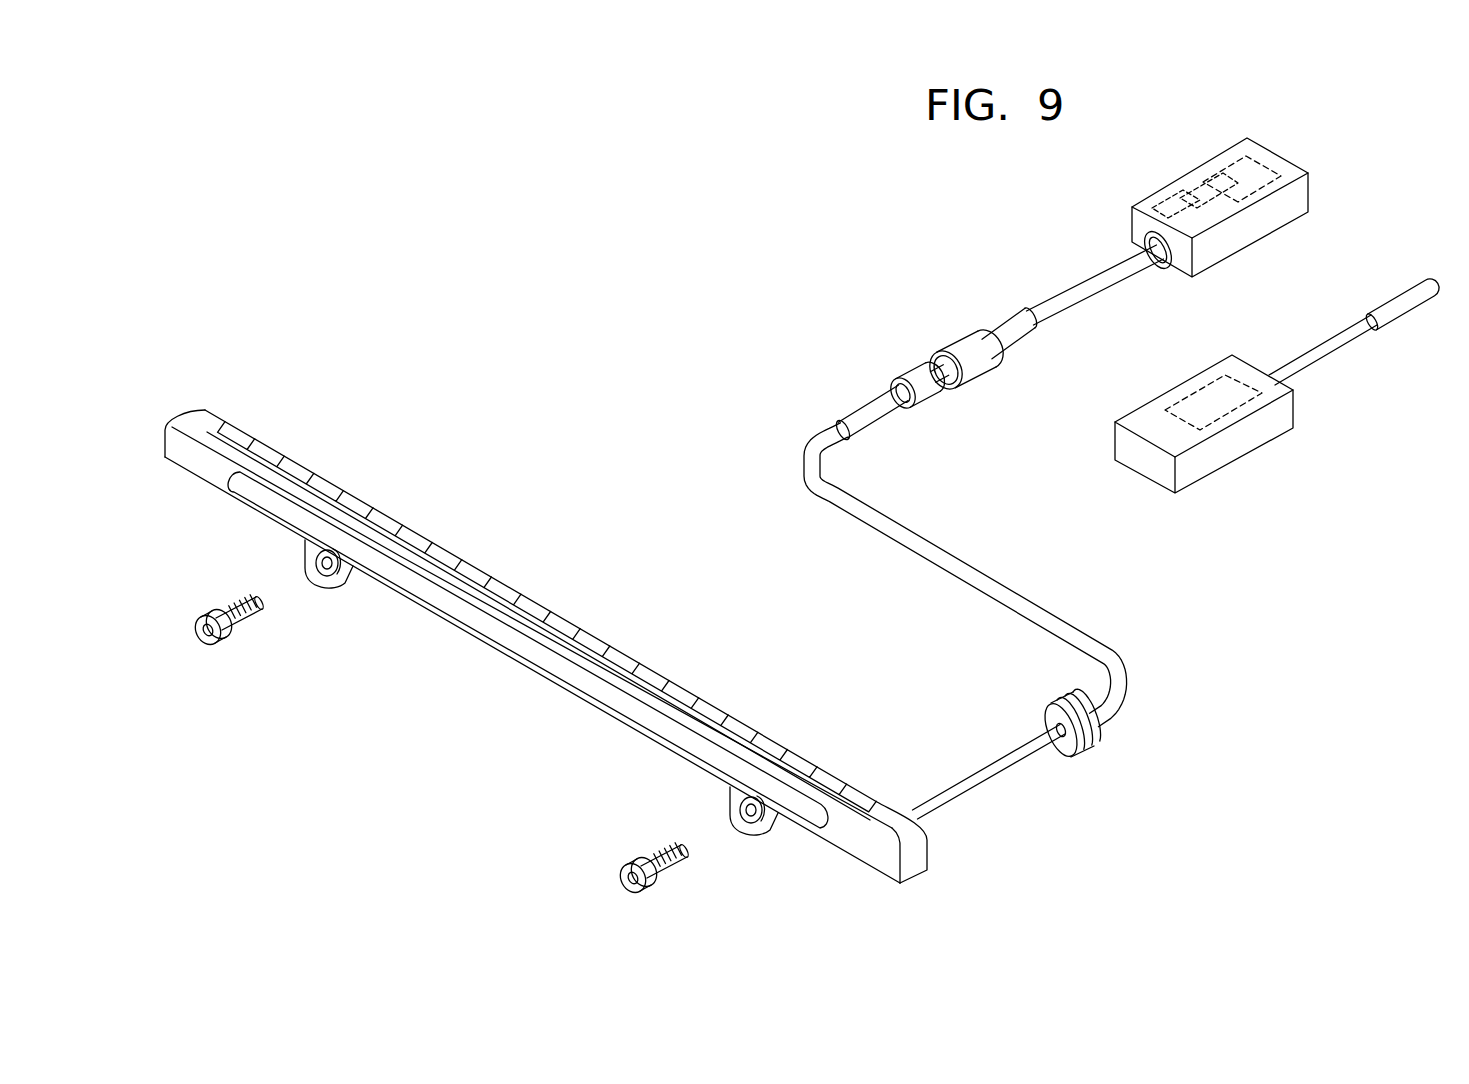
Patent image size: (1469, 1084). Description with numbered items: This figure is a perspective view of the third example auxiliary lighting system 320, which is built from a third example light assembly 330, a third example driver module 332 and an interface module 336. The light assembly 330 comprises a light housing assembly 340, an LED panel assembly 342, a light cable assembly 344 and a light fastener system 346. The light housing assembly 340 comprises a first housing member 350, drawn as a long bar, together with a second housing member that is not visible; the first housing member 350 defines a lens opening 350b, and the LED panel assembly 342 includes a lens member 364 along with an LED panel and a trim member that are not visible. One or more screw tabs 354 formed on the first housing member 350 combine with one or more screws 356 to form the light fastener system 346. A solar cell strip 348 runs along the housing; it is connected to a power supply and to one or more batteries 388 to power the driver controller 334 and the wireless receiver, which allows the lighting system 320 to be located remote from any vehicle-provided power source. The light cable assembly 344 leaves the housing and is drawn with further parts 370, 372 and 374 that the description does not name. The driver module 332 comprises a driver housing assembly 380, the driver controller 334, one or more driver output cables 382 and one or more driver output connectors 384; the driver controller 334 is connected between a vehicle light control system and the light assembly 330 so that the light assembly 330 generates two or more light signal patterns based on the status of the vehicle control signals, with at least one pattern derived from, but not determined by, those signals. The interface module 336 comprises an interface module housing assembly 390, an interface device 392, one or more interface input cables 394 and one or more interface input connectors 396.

The third example auxiliary lighting system 320 is at (752, 330).
The third example light assembly 330 is at (1123, 802).
The third example driver module 332 is at (1010, 275).
The driver controller 334 is at (1223, 167).
The interface module 336 is at (1310, 430).
The light housing assembly 340 is at (935, 878).
The LED panel assembly 342 is at (505, 655).
The light cable assembly 344 is at (1127, 660).
The light fastener system 346 is at (283, 555).
The solar cell strip 348 is at (597, 650).
The first housing member 350 is at (218, 468).
The lens opening 350b is at (637, 718).
The screw tabs 354 is at (327, 580).
The screws 356 is at (245, 620).
The lens member 364 is at (593, 690).
The cable 370 is at (962, 572).
The cable connector 372 is at (920, 393).
The bushing 374 is at (1053, 713).
The driver housing assembly 380 is at (1300, 195).
The driver output cables 382 is at (1102, 283).
The driver output connectors 384 is at (977, 368).
The batteries 388 is at (1160, 203).
The interface module housing assembly 390 is at (1150, 420).
The interface device 392 is at (1200, 387).
The interface input cables 394 is at (1320, 348).
The interface input connectors 396 is at (1397, 305).